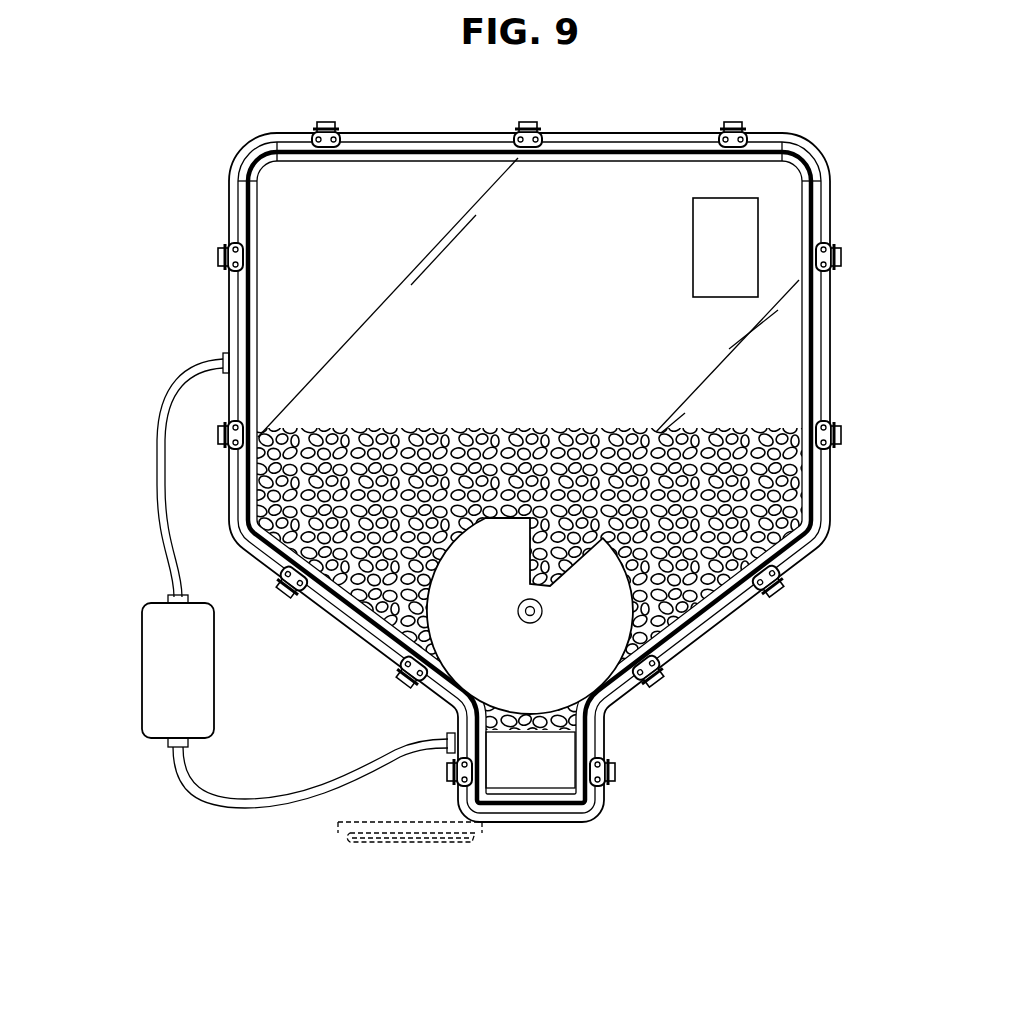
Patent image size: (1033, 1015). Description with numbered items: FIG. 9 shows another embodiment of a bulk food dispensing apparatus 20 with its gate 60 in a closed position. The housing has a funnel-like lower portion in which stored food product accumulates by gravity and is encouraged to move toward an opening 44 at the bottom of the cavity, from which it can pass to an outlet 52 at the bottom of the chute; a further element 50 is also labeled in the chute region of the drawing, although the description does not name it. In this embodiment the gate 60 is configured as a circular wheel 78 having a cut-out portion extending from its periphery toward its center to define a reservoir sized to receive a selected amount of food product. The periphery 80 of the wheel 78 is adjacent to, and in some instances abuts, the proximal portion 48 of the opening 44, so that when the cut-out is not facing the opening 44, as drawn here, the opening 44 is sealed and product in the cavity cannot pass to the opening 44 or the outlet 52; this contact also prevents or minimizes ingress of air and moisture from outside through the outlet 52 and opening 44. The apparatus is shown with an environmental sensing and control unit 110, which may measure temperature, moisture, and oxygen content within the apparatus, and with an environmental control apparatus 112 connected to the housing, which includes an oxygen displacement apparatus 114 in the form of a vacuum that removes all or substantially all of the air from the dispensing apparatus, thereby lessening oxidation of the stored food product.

The bulk food dispensing apparatus 20 is at (806, 96).
The opening 44 is at (544, 754).
The proximal portion of the opening 48 is at (606, 718).
The gasket 50 is at (579, 810).
The outlet 52 is at (560, 824).
The gate 60 is at (338, 824).
The circular wheel 78 is at (516, 676).
The periphery of the wheel 80 is at (507, 716).
The environmental sensing and control unit 110 is at (709, 258).
The environmental control apparatus 112 is at (121, 736).
The oxygen displacement apparatus 114 is at (168, 656).